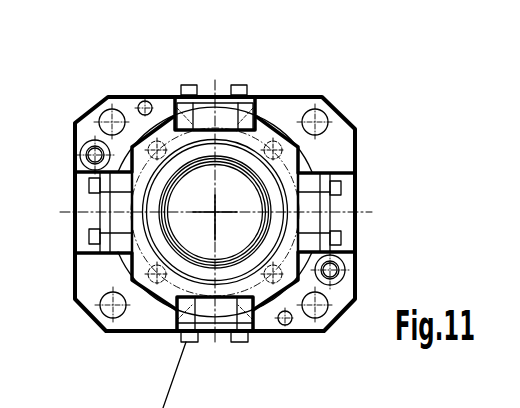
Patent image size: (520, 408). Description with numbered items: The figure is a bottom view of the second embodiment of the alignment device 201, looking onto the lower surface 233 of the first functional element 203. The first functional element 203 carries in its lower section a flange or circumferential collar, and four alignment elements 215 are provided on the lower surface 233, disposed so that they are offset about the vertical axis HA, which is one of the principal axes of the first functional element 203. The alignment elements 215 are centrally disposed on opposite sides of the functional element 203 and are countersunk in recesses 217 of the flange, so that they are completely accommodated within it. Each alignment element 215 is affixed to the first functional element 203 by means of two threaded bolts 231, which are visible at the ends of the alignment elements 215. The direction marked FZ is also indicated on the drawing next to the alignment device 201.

The alignment device 201 is at (365, 106).
The first functional element 203 is at (363, 130).
The alignment element 215 is at (226, 100).
The recess 217 is at (172, 130).
The threaded bolt 231 is at (190, 86).
The lower surface 233 is at (145, 318).
The vertical axis HA is at (215, 212).
The guide direction FZ is at (390, 279).